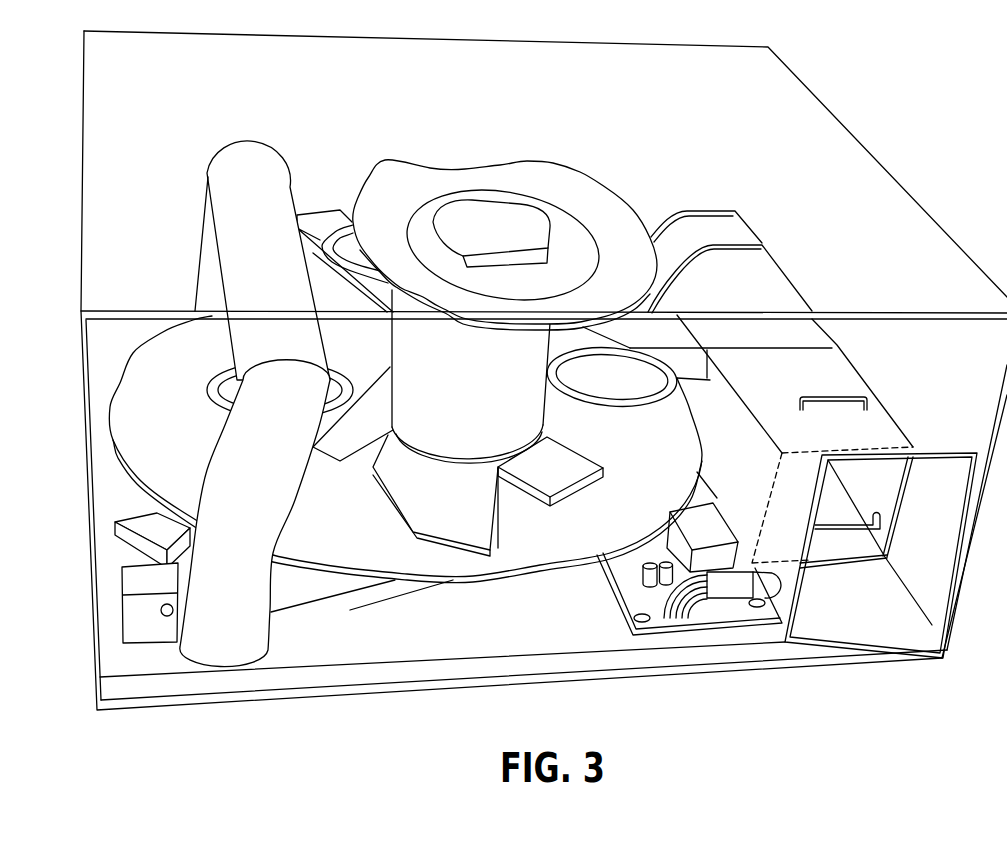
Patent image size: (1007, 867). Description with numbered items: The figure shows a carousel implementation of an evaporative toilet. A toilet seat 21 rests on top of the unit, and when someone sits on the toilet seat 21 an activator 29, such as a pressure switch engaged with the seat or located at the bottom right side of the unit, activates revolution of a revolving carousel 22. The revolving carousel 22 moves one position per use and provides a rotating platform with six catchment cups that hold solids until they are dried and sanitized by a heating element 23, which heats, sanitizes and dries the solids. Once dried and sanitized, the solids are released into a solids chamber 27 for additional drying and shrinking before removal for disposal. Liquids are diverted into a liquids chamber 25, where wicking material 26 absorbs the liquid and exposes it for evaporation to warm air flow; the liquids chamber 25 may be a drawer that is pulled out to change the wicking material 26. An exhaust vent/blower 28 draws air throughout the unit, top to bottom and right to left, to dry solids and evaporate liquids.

The toilet seat 21 is at (597, 214).
The revolving carousel 22 is at (189, 464).
The heating element 23 is at (273, 484).
The liquids chamber 25 is at (709, 299).
The wicking material 26 is at (774, 301).
The solids chamber 27 is at (893, 494).
The exhaust vent/blower 28 is at (724, 239).
The activator 29 is at (154, 590).